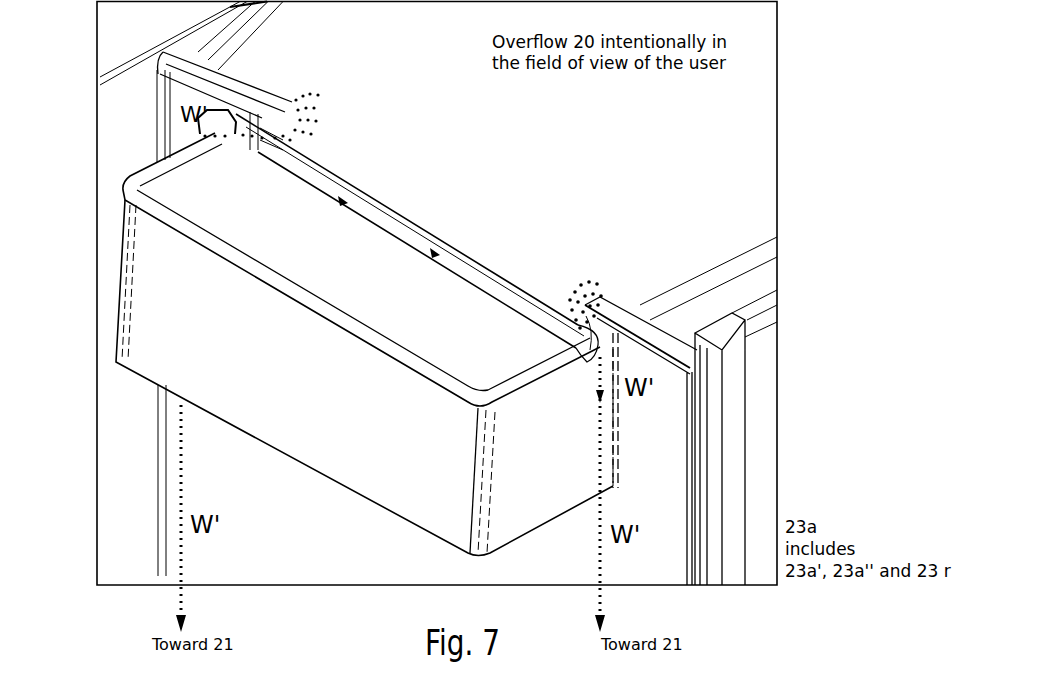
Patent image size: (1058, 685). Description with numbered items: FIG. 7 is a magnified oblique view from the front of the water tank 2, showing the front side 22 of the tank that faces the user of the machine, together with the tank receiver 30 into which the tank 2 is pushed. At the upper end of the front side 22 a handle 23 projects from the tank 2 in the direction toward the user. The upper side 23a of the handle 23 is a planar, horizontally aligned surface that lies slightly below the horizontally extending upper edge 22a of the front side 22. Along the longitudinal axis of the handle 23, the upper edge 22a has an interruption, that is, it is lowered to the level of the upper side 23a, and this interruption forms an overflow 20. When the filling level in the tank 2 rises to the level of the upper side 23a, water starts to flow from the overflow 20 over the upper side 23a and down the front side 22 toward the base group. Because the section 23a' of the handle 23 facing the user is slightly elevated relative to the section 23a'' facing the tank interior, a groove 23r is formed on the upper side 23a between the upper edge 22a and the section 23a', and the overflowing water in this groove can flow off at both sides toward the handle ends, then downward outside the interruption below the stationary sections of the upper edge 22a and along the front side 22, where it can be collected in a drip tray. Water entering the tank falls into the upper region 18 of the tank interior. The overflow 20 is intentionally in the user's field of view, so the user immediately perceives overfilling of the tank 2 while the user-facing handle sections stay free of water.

The water tank 2 is at (730, 133).
The upper region of the interior of the water tank 18 is at (242, 36).
The overflow 20 is at (229, 112).
The front side of the water tank 22 is at (361, 576).
The upper edge of the front side 22a is at (195, 58).
The handle 23 is at (178, 352).
The upper side of the handle 23a is at (417, 235).
The section of the handle upper side facing the user 23a' is at (407, 219).
The section of the upper side facing the tank interior 23a'' is at (421, 250).
The groove 23r is at (372, 213).
The tank receiver 30 is at (757, 383).